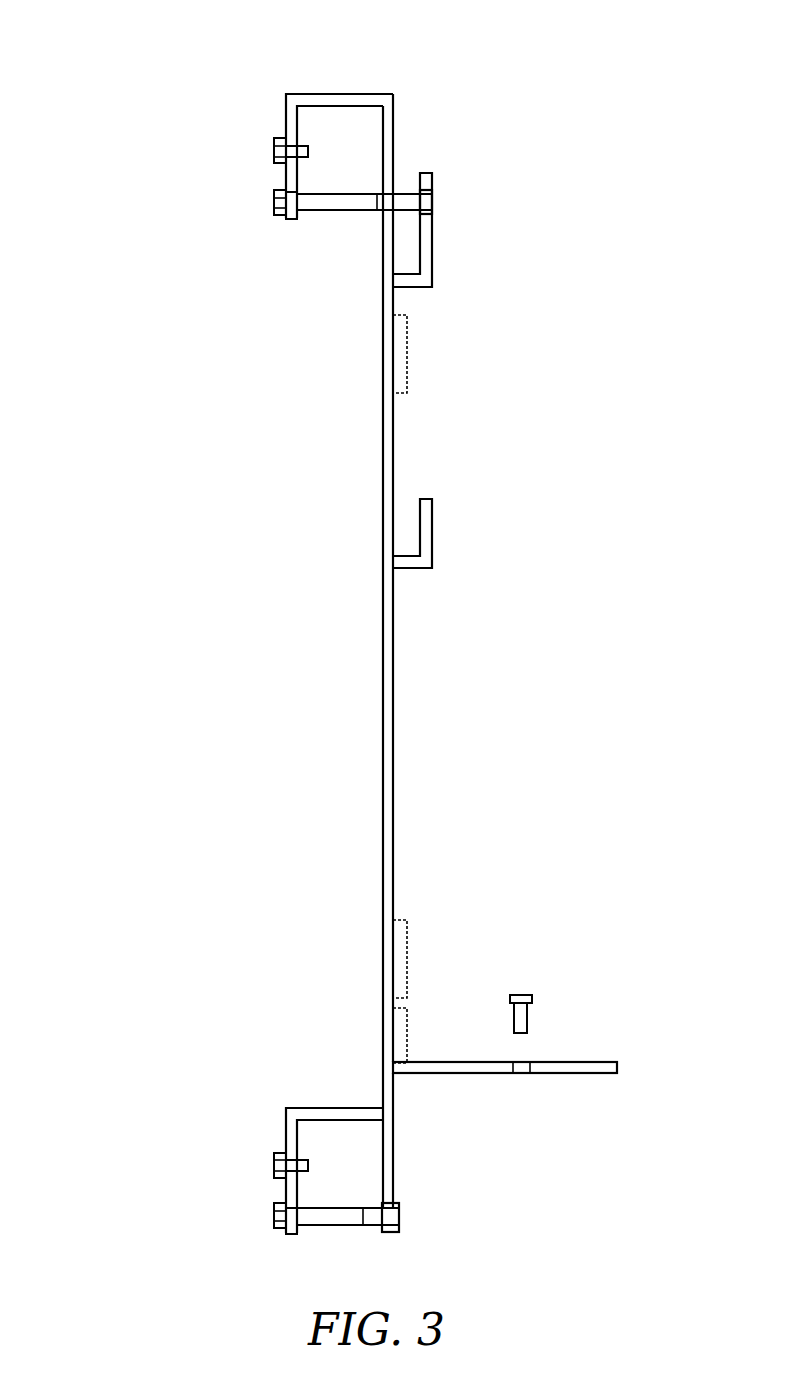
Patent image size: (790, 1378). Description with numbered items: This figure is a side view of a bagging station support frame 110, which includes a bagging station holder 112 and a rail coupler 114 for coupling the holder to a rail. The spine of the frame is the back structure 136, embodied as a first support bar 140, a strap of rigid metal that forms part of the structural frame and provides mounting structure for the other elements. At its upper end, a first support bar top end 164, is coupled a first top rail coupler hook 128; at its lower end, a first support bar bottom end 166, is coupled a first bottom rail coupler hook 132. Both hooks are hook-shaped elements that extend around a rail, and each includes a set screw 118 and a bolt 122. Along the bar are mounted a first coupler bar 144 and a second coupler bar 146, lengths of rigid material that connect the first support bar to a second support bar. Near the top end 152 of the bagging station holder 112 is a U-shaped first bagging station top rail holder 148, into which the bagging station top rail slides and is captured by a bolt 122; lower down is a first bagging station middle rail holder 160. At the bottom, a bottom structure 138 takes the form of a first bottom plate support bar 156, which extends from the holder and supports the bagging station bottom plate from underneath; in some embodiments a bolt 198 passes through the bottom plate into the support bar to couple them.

The bagging station support frame 110 is at (455, 78).
The bagging station holder 112 is at (522, 484).
The rail coupler 114 is at (102, 117).
The set screw 118 is at (274, 150).
The bolt 122 is at (336, 203).
The first top rail coupler hook 128 is at (338, 101).
The first bottom rail coupler hook 132 is at (335, 1113).
The back structure 136 is at (238, 521).
The bottom structure 138 is at (614, 976).
The first support bar 140 is at (383, 735).
The first coupler bar 144 is at (407, 353).
The second coupler bar 146 is at (407, 950).
The first bagging station top rail holder 148 is at (432, 238).
The top end 152 is at (458, 173).
The first bottom plate support bar 156 is at (594, 1066).
The first bagging station middle rail holder 160 is at (432, 511).
The first support bar top end 164 is at (388, 112).
The first support bar bottom end 166 is at (388, 1172).
The bolt 198 is at (520, 993).